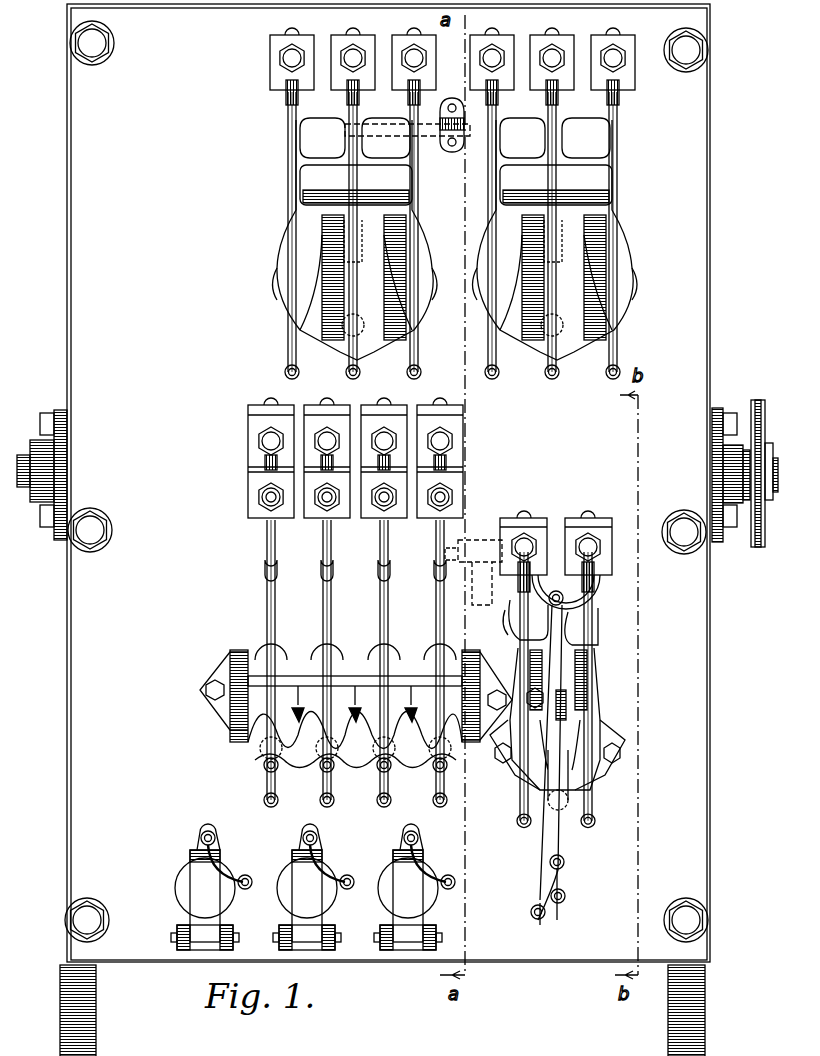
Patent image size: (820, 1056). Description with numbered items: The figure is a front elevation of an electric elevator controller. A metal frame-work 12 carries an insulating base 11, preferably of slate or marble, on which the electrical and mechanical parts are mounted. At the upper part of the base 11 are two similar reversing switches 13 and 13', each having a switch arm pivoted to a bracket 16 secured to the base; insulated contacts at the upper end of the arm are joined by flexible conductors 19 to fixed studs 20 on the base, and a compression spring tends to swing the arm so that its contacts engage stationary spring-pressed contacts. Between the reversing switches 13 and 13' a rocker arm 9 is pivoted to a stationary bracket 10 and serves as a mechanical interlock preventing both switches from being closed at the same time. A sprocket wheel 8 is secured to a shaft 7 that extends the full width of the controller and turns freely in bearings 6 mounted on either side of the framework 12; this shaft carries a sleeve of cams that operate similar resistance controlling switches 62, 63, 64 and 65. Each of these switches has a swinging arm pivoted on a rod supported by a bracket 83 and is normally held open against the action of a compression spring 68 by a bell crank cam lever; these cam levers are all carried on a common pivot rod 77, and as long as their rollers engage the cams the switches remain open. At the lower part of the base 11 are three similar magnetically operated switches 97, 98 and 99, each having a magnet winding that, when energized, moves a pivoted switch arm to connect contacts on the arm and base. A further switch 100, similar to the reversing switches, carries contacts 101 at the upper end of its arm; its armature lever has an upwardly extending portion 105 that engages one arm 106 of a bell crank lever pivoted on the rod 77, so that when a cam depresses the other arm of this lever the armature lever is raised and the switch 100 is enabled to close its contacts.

The bearings 6 is at (55, 410).
The shaft 7 is at (776, 470).
The sprocket wheel 8 is at (758, 400).
The rocker arm 9 is at (455, 130).
The stationary bracket 10 is at (452, 154).
The insulating base 11 is at (695, 260).
The metal frame-work 12 is at (96, 1038).
The reversing switch 13 is at (570, 203).
The reversing switch 13' is at (316, 194).
The bracket 16 is at (590, 322).
The flexible conductors 19 is at (416, 178).
The fixed studs 20 is at (286, 367).
The resistance controlling switch 62 is at (440, 448).
The resistance controlling switch 63 is at (384, 448).
The resistance controlling switch 64 is at (327, 448).
The resistance controlling switch 65 is at (271, 448).
The compression spring 68 is at (265, 750).
The pivot rod 77 is at (468, 545).
The bracket 83 is at (244, 746).
The magnetically operated switch 97 is at (186, 852).
The magnetically operated switch 98 is at (290, 850).
The magnetically operated switch 99 is at (392, 850).
The switch 100 is at (533, 515).
The contacts 101 is at (582, 516).
The upwardly extending portion 105 is at (540, 632).
The arm of bell crank lever 106 is at (522, 595).